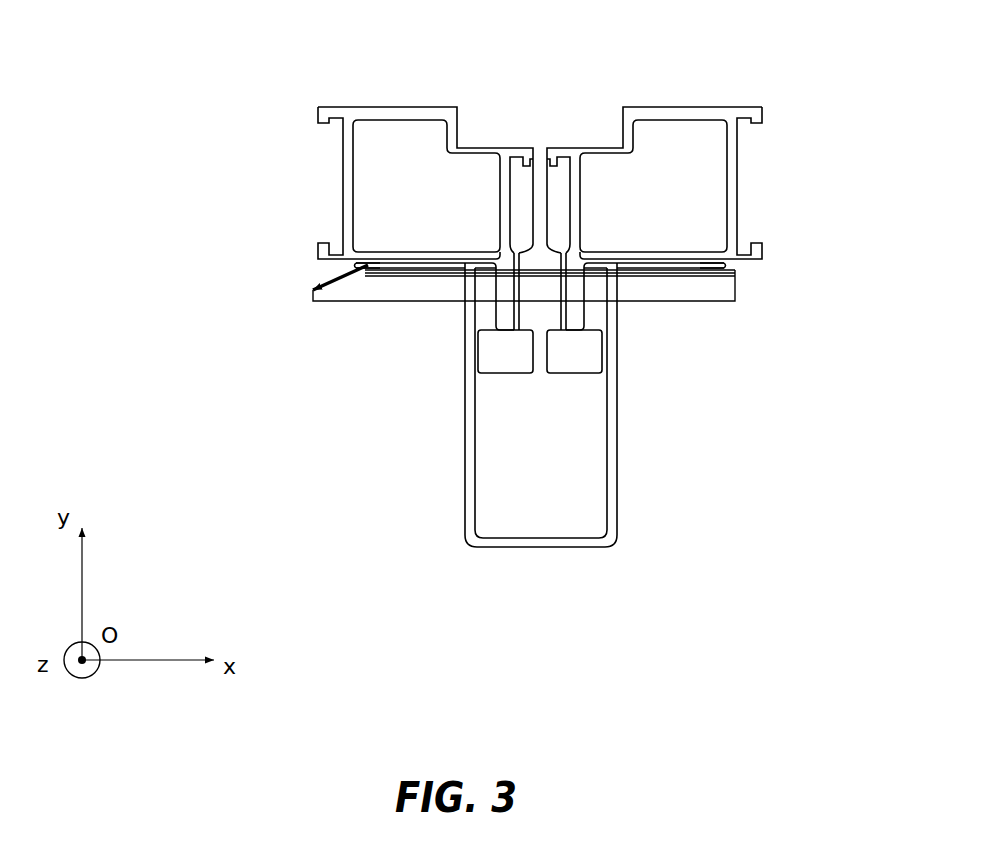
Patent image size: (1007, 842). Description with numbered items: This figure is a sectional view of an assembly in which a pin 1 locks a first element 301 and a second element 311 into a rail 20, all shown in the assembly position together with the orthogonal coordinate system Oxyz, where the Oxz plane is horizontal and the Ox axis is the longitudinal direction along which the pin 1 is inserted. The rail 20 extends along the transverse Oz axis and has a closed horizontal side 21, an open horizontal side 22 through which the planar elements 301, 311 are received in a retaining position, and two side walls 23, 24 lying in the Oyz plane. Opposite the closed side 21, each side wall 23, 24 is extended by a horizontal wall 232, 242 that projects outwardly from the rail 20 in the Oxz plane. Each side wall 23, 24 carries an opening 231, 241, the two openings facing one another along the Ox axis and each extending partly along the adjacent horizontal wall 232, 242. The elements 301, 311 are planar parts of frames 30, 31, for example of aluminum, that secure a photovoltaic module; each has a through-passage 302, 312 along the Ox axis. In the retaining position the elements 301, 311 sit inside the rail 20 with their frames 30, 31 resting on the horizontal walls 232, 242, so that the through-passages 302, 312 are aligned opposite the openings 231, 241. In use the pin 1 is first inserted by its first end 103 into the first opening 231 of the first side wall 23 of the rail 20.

The pin 1 is at (514, 329).
The first end of the pin 103 is at (311, 291).
The rail 20 is at (517, 335).
The closed horizontal side 21 is at (527, 556).
The open horizontal side 22 is at (598, 261).
The first side wall 23 is at (711, 399).
The second side wall 24 is at (345, 399).
The first opening 231 is at (620, 333).
The first horizontal wall 232 is at (737, 270).
The second opening 241 is at (462, 333).
The second horizontal wall 242 is at (351, 267).
The first frame 30 is at (698, 180).
The first element 301 is at (563, 252).
The first through-passage 302 is at (586, 289).
The second frame 31 is at (369, 180).
The second element 311 is at (520, 252).
The second through-passage 312 is at (494, 289).